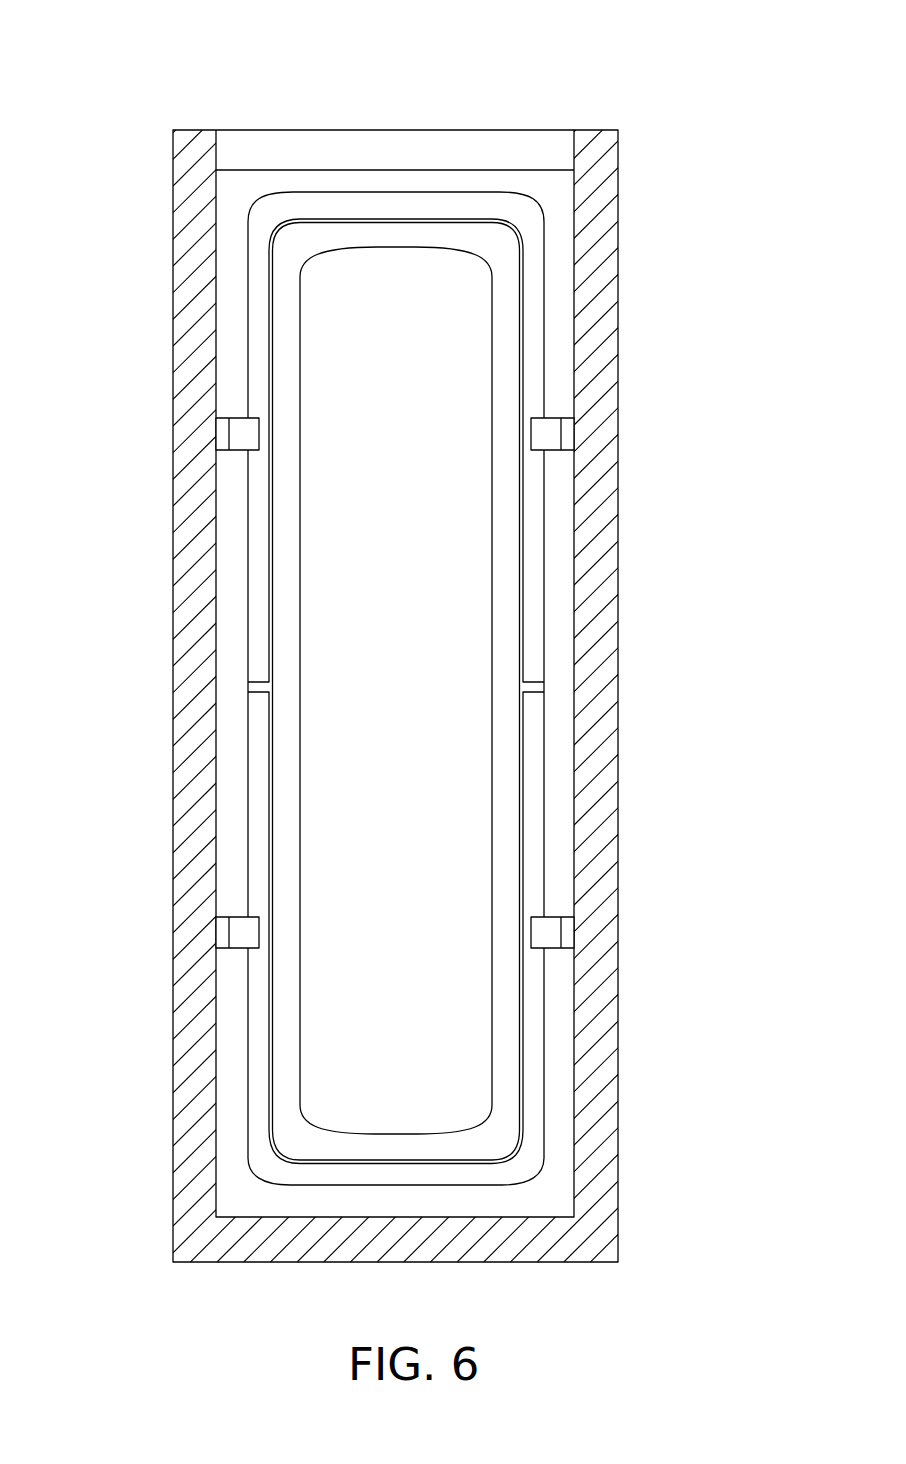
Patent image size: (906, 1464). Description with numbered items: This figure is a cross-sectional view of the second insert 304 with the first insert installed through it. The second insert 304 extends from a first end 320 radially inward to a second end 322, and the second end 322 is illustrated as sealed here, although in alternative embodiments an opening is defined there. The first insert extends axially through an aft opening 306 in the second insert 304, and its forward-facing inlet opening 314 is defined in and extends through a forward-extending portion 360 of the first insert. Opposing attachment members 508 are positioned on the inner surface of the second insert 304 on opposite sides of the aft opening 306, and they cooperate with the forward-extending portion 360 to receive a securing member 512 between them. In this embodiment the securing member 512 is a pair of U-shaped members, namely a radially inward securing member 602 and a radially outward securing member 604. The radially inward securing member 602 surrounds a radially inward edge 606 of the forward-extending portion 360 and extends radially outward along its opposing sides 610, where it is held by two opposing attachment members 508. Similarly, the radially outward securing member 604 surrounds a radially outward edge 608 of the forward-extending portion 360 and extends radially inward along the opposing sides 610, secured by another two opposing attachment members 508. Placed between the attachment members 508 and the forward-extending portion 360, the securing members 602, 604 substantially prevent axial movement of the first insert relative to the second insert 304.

The second insert 304 is at (618, 1048).
The aft opening 306 is at (536, 690).
The forward-facing inlet opening 314 is at (476, 552).
The first end 320 is at (513, 100).
The second end 322 is at (294, 1285).
The forward-extending portion 360 is at (522, 277).
The attachment members 508 is at (216, 430).
The securing member 512 is at (511, 685).
The radially inward securing member 602 is at (506, 1007).
The radially outward securing member 604 is at (511, 365).
The radially inward edge 606 is at (400, 1162).
The radially outward edge 608 is at (402, 219).
The opposing sides 610 is at (272, 1091).